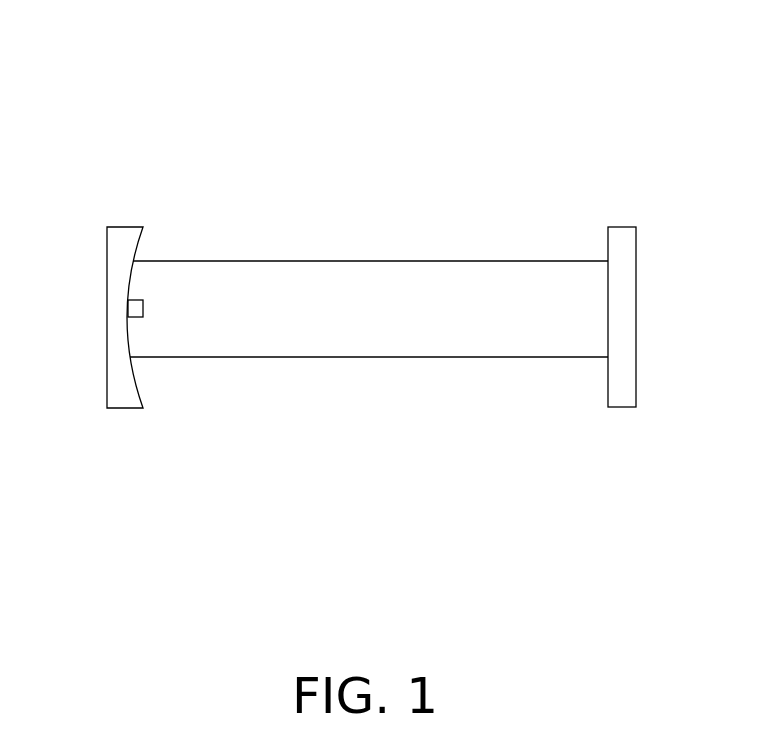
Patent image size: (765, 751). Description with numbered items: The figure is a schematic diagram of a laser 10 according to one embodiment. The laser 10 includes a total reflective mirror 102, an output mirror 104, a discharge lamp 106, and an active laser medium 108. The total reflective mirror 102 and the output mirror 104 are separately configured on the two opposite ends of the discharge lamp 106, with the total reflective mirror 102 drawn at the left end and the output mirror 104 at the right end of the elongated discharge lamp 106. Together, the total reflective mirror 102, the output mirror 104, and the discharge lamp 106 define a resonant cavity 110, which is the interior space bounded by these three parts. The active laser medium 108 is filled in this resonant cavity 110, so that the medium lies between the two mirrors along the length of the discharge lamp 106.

The laser 10 is at (381, 84).
The total reflective mirror 102 is at (118, 235).
The output mirror 104 is at (616, 238).
The discharge lamp 106 is at (317, 260).
The active laser medium 108 is at (453, 276).
The resonant cavity 110 is at (379, 338).